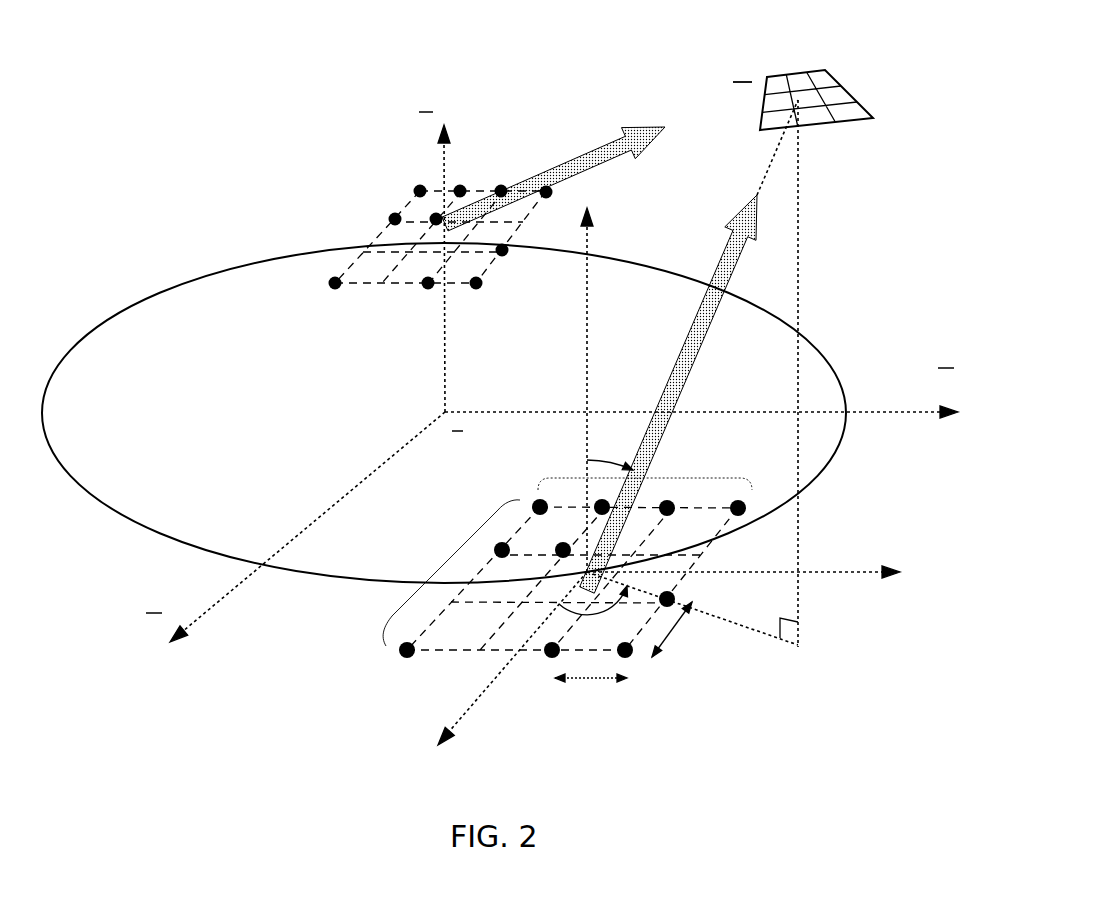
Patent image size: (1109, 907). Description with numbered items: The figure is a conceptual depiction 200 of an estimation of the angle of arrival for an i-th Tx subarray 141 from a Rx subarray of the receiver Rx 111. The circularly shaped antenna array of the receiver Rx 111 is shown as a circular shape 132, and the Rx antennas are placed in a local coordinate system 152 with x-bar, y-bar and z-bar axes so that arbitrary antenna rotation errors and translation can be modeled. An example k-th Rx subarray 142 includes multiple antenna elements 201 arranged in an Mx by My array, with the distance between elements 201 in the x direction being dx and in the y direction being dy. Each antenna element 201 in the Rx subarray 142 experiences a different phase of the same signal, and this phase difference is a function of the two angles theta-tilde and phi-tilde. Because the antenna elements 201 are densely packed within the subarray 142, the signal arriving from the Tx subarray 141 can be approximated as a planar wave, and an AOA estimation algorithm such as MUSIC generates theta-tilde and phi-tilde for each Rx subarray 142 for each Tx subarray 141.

The coordinate system diagram 200 is at (212, 140).
The circular shape 132 is at (102, 503).
The local coordinate system 152 is at (428, 405).
The i-th Tx subarray 141 is at (833, 53).
The k-th Rx subarray 142 is at (595, 591).
The antenna element 201 is at (404, 657).
The receiver Rx 111 is at (266, 734).